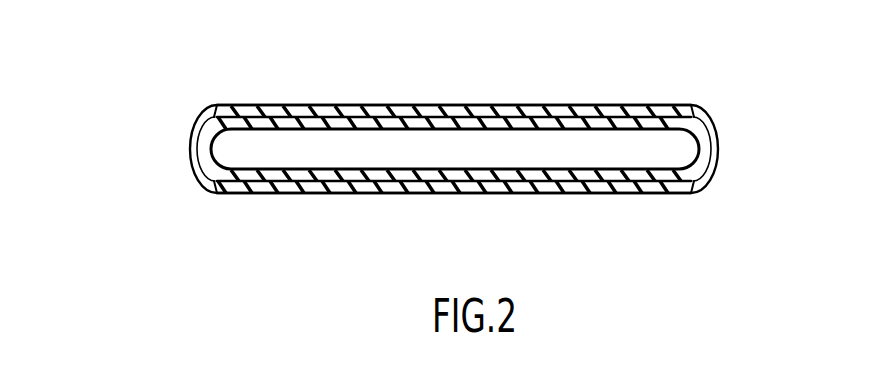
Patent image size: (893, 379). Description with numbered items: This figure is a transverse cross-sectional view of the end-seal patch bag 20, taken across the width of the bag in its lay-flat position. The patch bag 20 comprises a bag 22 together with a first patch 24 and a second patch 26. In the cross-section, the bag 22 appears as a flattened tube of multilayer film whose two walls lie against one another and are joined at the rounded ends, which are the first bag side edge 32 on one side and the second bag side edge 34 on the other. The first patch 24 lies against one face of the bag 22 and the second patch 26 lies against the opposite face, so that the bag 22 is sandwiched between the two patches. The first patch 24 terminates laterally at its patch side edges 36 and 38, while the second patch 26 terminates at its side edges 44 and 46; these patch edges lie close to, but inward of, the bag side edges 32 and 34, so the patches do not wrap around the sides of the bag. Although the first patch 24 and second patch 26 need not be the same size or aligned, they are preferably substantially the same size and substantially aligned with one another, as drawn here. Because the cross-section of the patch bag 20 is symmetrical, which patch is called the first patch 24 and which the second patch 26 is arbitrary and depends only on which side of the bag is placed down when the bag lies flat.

The patch bag 20 is at (138, 119).
The bag 22 is at (400, 124).
The first patch 24 is at (538, 114).
The second patch 26 is at (385, 190).
The first bag side edge 32 is at (190, 150).
The second bag side edge 34 is at (717, 147).
The patch side edge 36 is at (213, 110).
The patch side edge 38 is at (695, 112).
The side edge 44 is at (210, 190).
The side edge 46 is at (695, 190).